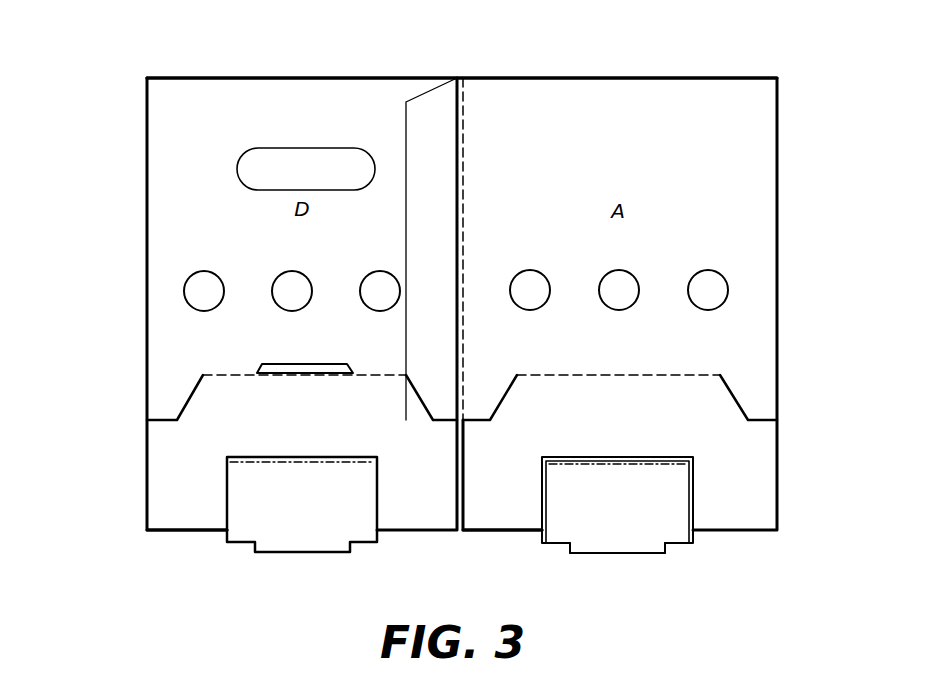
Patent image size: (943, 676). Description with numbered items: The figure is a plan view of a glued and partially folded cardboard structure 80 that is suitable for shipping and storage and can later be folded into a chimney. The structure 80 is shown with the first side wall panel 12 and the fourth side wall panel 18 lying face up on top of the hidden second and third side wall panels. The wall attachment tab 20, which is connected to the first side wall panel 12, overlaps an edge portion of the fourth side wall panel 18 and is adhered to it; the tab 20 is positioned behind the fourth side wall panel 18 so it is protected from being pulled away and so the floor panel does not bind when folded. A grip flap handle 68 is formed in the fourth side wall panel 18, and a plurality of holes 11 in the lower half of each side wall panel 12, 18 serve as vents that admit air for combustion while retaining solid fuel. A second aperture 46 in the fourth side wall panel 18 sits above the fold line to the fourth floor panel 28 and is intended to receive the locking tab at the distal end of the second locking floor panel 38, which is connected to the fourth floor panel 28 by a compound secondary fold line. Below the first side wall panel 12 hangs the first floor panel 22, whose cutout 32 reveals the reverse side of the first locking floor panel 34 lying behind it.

The cardboard structure 80 is at (92, 141).
The first side wall panel 12 is at (625, 77).
The fourth side wall panel 18 is at (280, 76).
The wall attachment tab 20 is at (433, 92).
The handle 68 is at (314, 131).
The holes 11 is at (205, 271).
The second aperture 46 is at (308, 363).
The fourth floor panel 28 is at (193, 533).
The second locking floor panel 38 is at (318, 527).
The first floor panel 22 is at (507, 533).
The cutout 32 is at (714, 489).
The first locking floor panel 34 is at (648, 515).